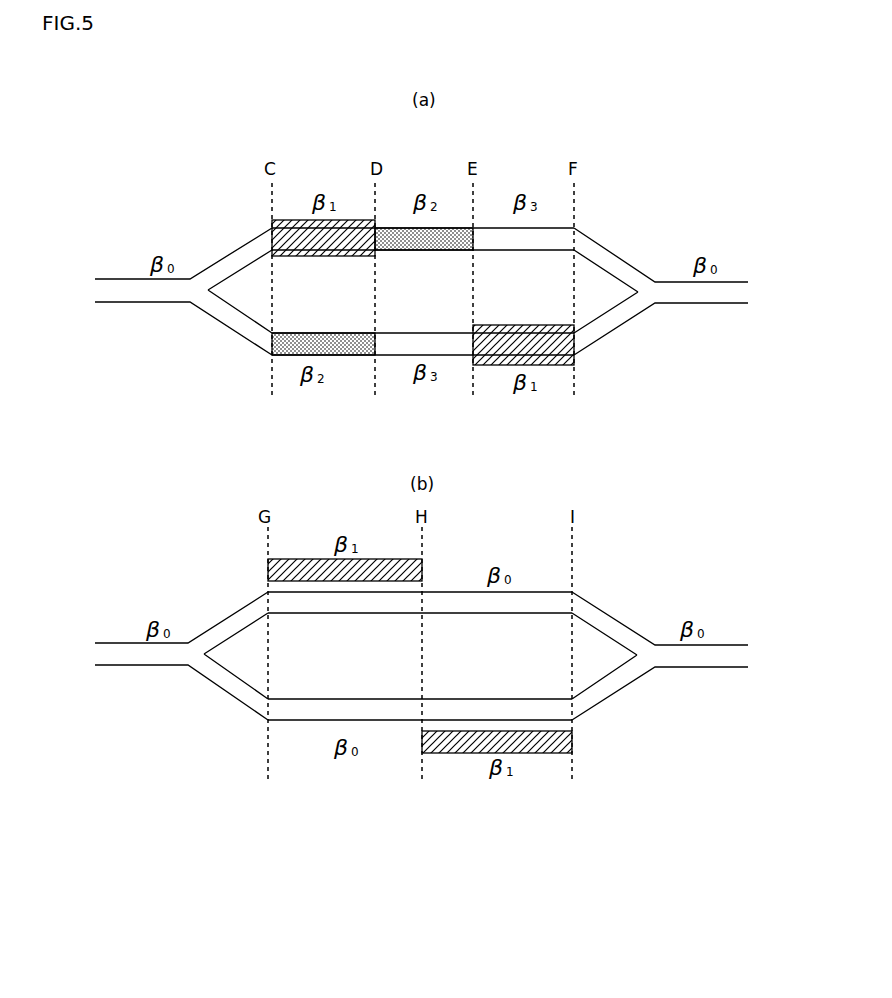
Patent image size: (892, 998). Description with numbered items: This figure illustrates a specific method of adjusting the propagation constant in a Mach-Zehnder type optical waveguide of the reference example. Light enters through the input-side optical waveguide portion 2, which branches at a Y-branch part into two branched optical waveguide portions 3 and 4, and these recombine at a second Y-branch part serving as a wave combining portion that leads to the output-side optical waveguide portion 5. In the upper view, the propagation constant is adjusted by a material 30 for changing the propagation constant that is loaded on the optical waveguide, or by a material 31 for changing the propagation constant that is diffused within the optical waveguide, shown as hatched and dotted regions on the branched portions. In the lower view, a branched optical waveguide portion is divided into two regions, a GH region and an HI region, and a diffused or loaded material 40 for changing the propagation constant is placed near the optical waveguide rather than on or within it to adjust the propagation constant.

The input-side optical waveguide portion 2 is at (155, 293).
The branched optical waveguide portion 3 is at (501, 211).
The branched optical waveguide portion 4 is at (455, 370).
The output-side optical waveguide portion 5 is at (683, 298).
The material for changing the propagation constant 30 is at (288, 220).
The material for changing the propagation constant 31 is at (392, 240).
The diffused or loaded material for changing the propagation constant 40 is at (320, 563).